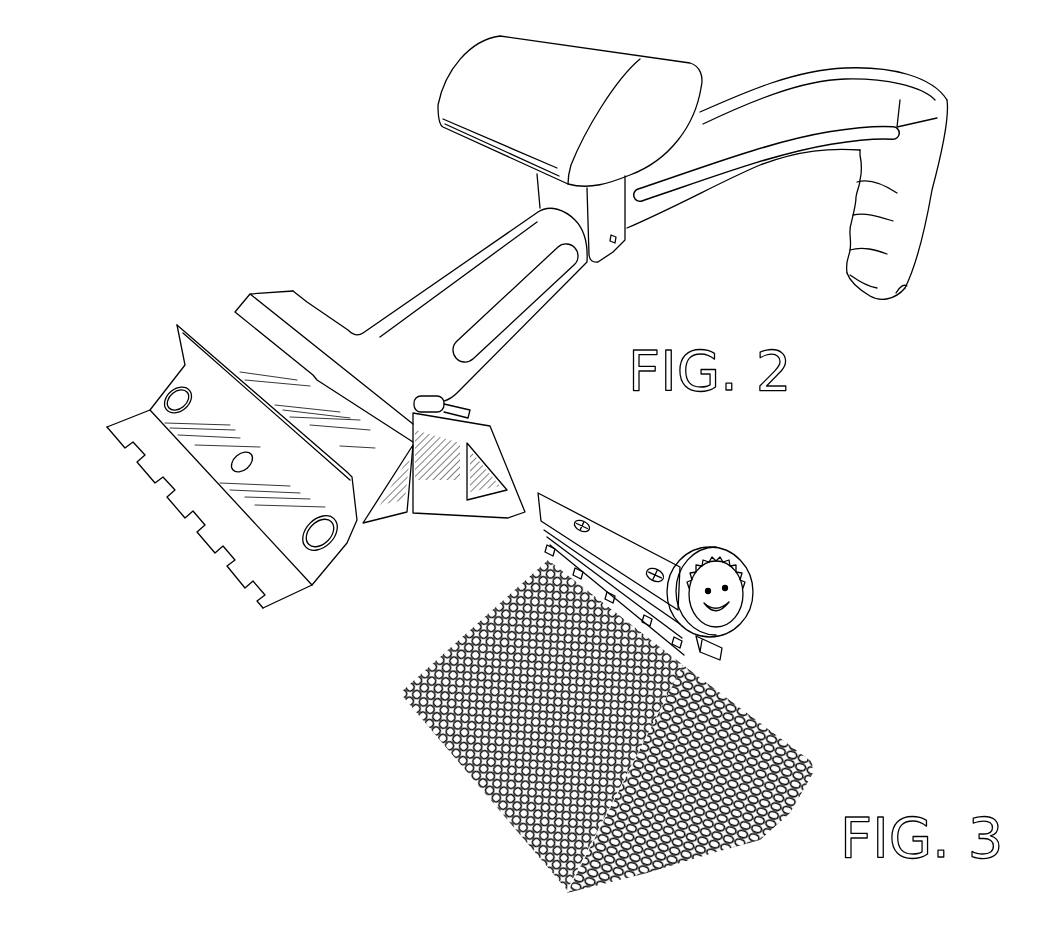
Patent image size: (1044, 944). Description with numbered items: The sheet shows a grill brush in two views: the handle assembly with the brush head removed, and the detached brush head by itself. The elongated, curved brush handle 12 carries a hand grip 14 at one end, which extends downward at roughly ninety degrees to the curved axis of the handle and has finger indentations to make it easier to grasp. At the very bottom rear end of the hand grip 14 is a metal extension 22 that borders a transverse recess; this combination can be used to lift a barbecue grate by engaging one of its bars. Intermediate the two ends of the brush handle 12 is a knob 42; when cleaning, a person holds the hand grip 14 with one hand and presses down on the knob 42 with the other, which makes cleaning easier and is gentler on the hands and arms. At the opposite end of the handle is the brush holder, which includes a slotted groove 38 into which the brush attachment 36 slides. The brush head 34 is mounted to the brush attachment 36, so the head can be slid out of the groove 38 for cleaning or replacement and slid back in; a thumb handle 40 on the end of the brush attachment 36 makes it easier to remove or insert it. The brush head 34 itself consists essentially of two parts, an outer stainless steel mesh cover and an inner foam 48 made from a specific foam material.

In FIG. 2, the brush handle 12 is at (783, 95).
In FIG. 2, the hand grip 14 is at (903, 192).
In FIG. 2, the metal extension 22 is at (905, 289).
In FIG. 2, the knob 42 is at (482, 73).
In FIG. 2, the slotted groove 38 is at (430, 513).
In FIG. 3, the brush attachment 36 is at (622, 544).
In FIG. 3, the thumb handle 40 is at (752, 588).
In FIG. 3, the brush head 34 is at (803, 745).
In FIG. 3, the foam 48 is at (463, 790).